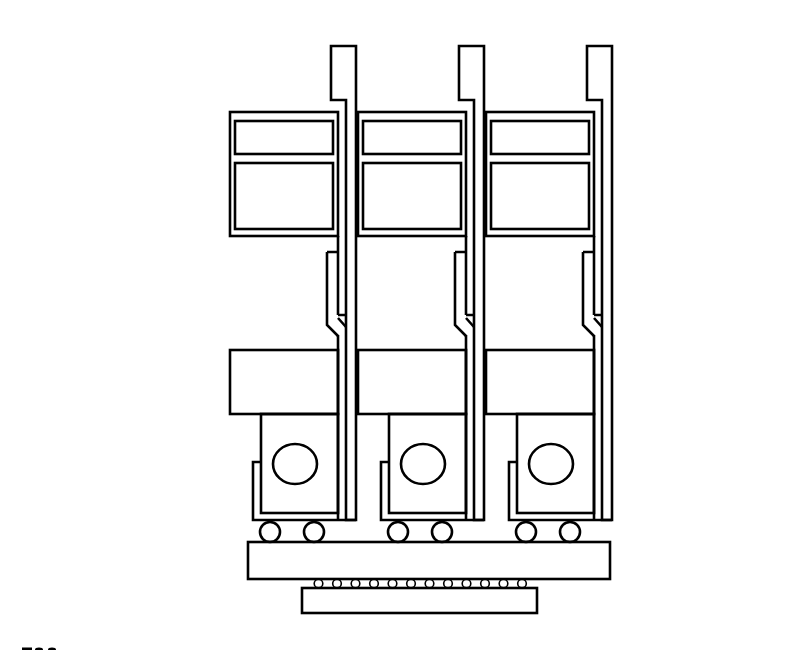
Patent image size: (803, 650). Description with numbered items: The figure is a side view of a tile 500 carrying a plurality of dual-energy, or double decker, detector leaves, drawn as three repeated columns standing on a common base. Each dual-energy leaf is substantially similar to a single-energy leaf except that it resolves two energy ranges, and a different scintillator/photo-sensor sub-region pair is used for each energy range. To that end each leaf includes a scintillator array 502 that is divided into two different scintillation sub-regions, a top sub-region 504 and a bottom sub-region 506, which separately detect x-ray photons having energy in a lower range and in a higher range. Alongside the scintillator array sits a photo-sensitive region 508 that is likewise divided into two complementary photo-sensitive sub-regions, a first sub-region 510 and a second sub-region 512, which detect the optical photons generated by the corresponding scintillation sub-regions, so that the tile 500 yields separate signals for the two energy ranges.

The tile 500 is at (132, 89).
The scintillator array 502 is at (538, 76).
The top sub-region 504 is at (580, 138).
The bottom sub-region 506 is at (580, 200).
The photo-sensitive region 508 is at (274, 77).
The first sub-region 510 is at (333, 148).
The second sub-region 512 is at (333, 208).